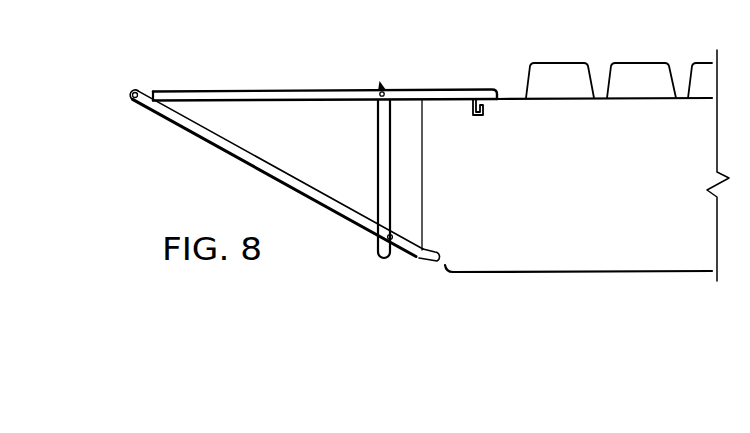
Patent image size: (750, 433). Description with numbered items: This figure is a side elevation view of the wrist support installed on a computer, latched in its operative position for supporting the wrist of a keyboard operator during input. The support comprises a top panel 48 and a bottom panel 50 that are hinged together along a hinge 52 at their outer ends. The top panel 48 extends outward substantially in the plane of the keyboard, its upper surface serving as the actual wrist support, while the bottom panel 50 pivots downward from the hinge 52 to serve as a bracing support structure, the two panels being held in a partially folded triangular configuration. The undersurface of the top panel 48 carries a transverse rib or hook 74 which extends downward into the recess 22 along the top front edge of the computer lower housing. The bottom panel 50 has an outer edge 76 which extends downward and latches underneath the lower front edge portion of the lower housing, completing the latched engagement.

The recess 22 is at (478, 116).
The top panel 48 is at (275, 89).
The bottom panel 50 is at (205, 137).
The hinge 52 is at (132, 92).
The hook 74 is at (484, 107).
The outer edge 76 is at (443, 263).